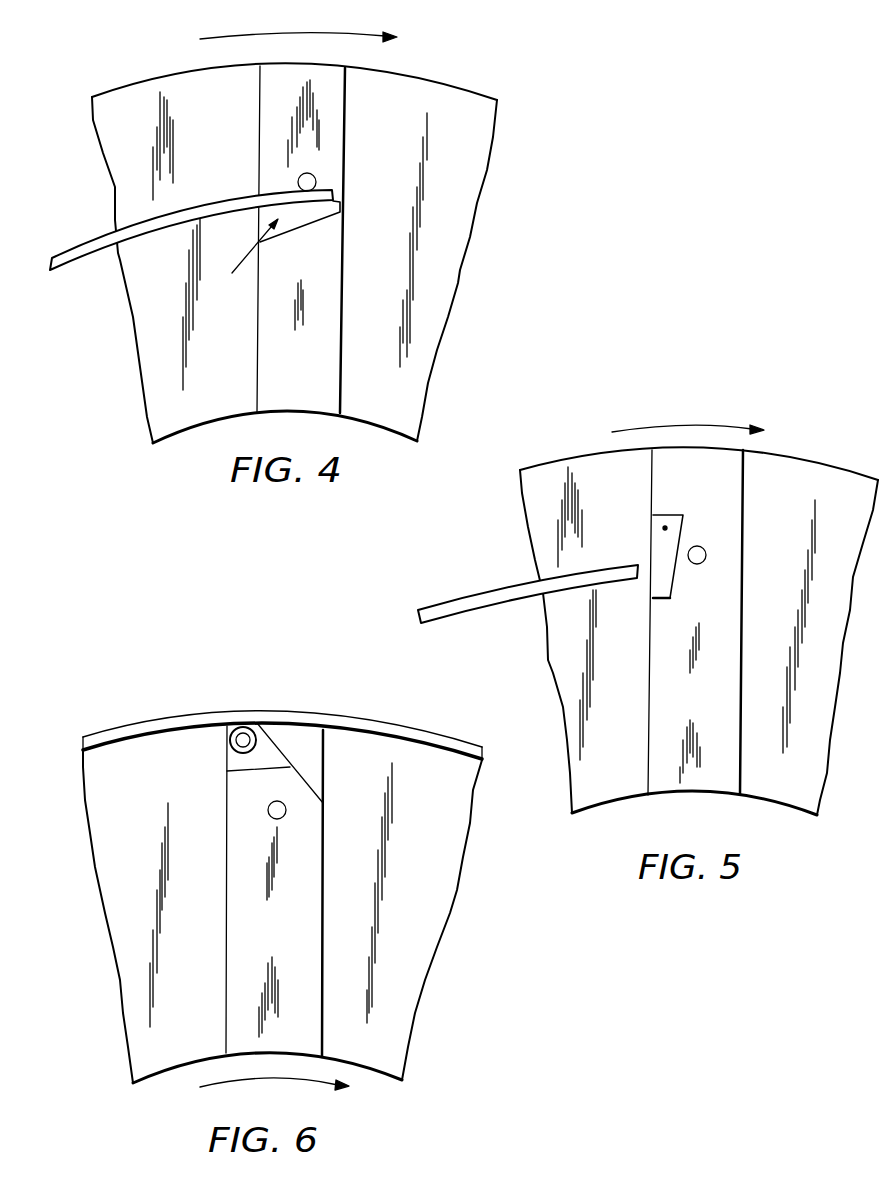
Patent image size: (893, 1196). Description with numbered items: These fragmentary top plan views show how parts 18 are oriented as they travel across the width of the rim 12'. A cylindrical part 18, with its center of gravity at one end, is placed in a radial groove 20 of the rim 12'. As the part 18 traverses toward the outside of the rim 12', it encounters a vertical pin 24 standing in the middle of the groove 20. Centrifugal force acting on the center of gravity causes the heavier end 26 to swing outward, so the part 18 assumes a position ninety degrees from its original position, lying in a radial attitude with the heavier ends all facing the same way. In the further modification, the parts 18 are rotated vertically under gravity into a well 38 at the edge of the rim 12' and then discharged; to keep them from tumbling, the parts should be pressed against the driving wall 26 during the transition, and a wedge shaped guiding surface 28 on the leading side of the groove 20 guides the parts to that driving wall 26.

In FIG. 4, the rim 12' is at (295, 243).
In FIG. 4, the part 18 is at (315, 211).
In FIG. 5, the part 18 is at (668, 560).
In FIG. 6, the part 18 is at (243, 740).
In FIG. 4, the groove 20 is at (312, 358).
In FIG. 5, the groove 20 is at (702, 708).
In FIG. 6, the groove 20 is at (286, 928).
In FIG. 4, the vertical pin 24 is at (308, 173).
In FIG. 5, the vertical pin 24 is at (706, 553).
In FIG. 4, the heavier end / driving wall 26 is at (274, 228).
In FIG. 5, the heavier end / driving wall 26 is at (665, 528).
In FIG. 6, the heavier end / driving wall 26 is at (226, 757).
In FIG. 6, the wedge shaped guiding surface 28 is at (303, 763).
In FIG. 6, the well 38 is at (265, 757).